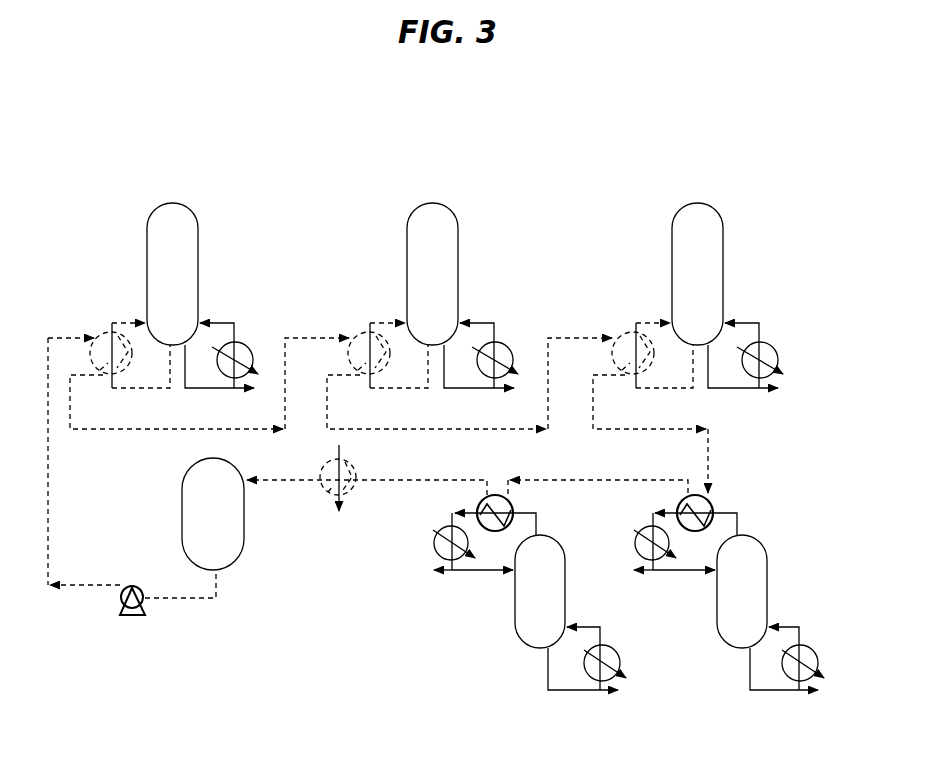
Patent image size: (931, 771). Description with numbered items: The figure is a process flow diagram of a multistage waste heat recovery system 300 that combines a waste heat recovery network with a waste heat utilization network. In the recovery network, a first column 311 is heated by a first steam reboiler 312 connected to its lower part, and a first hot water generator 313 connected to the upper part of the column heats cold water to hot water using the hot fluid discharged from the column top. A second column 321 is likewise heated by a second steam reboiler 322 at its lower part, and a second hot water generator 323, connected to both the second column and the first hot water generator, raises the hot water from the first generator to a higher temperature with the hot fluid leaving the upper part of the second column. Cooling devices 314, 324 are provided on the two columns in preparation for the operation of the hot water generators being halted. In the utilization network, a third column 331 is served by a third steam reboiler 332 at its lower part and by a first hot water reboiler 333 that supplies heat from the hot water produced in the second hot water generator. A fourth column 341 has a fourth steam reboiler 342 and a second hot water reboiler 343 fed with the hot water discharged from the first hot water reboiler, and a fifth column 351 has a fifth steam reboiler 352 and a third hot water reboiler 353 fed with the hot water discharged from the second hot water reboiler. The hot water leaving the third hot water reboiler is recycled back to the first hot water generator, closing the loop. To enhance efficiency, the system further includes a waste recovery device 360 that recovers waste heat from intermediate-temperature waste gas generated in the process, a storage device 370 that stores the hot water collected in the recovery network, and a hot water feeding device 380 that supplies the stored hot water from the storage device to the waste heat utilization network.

The multistage waste heat recovery system 300 is at (464, 152).
The third column 331 is at (196, 222).
The third steam reboiler 332 is at (250, 344).
The first hot water reboiler 333 is at (98, 338).
The fourth column 341 is at (455, 222).
The fourth steam reboiler 342 is at (510, 344).
The second hot water reboiler 343 is at (356, 338).
The fifth column 351 is at (722, 222).
The fifth steam reboiler 352 is at (773, 348).
The third hot water reboiler 353 is at (622, 338).
The waste recovery device 360 is at (329, 496).
The storage device 370 is at (182, 516).
The hot water feeding device 380 is at (132, 617).
The second column 321 is at (515, 622).
The second steam reboiler 322 is at (615, 649).
The second hot water generator 323 is at (512, 503).
The cooling device 324 is at (437, 548).
The first column 311 is at (767, 592).
The first steam reboiler 312 is at (813, 649).
The first hot water generator 313 is at (712, 503).
The cooling device 314 is at (638, 548).